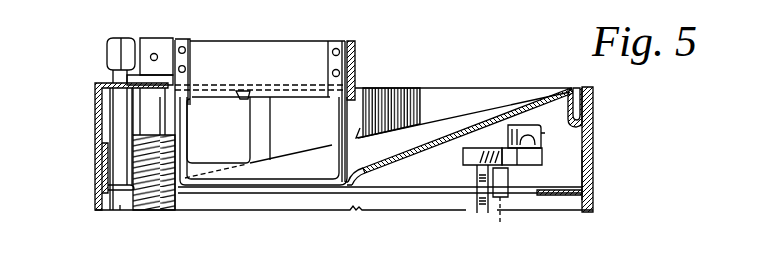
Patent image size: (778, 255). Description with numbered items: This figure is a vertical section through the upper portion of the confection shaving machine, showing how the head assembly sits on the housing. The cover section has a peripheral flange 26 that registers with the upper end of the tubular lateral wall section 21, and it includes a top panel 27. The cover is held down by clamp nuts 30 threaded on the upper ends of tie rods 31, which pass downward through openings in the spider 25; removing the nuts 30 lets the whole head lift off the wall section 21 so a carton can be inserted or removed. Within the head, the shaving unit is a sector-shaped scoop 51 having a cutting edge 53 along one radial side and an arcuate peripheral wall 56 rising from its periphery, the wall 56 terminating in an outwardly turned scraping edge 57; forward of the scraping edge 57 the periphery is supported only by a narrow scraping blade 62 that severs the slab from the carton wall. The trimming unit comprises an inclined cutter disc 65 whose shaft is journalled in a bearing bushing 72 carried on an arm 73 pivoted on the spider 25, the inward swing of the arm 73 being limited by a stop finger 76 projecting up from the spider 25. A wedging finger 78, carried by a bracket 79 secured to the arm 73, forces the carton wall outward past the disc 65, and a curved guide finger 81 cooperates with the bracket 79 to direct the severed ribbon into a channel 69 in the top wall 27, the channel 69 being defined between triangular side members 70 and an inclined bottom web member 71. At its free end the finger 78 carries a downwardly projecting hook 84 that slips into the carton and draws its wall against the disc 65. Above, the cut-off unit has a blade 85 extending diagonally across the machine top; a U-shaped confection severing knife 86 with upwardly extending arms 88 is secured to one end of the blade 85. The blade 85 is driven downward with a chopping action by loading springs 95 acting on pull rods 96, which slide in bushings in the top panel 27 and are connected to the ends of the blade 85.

The tubular lateral wall section 21 is at (95, 194).
The spider 25 is at (575, 196).
The peripheral flange 26 is at (95, 112).
The top panel 27 is at (356, 92).
The clamp nuts 30 is at (114, 51).
The tie rods 31 is at (123, 210).
The scoop 51 is at (413, 158).
The cutting edge 53 is at (293, 188).
The arcuate peripheral wall 56 is at (409, 100).
The scraping edge 57 is at (362, 130).
The scraping blade 62 is at (249, 131).
The cutter disc 65 is at (462, 156).
The channel 69 is at (594, 104).
The triangular shaped side members 70 is at (580, 92).
The inclined bottom web member 71 is at (594, 131).
The bearing bushing 72 is at (472, 176).
The arm 73 is at (541, 168).
The stop finger 76 is at (501, 198).
The wedging finger 78 is at (472, 130).
The bracket 79 is at (498, 125).
The guide finger 81 is at (520, 125).
The hook 84 is at (460, 136).
The blade 85 is at (356, 55).
The confection severing knife 86 is at (258, 161).
The arms 88 is at (333, 122).
The loading springs 95 is at (155, 210).
The pull rods 96 is at (155, 45).